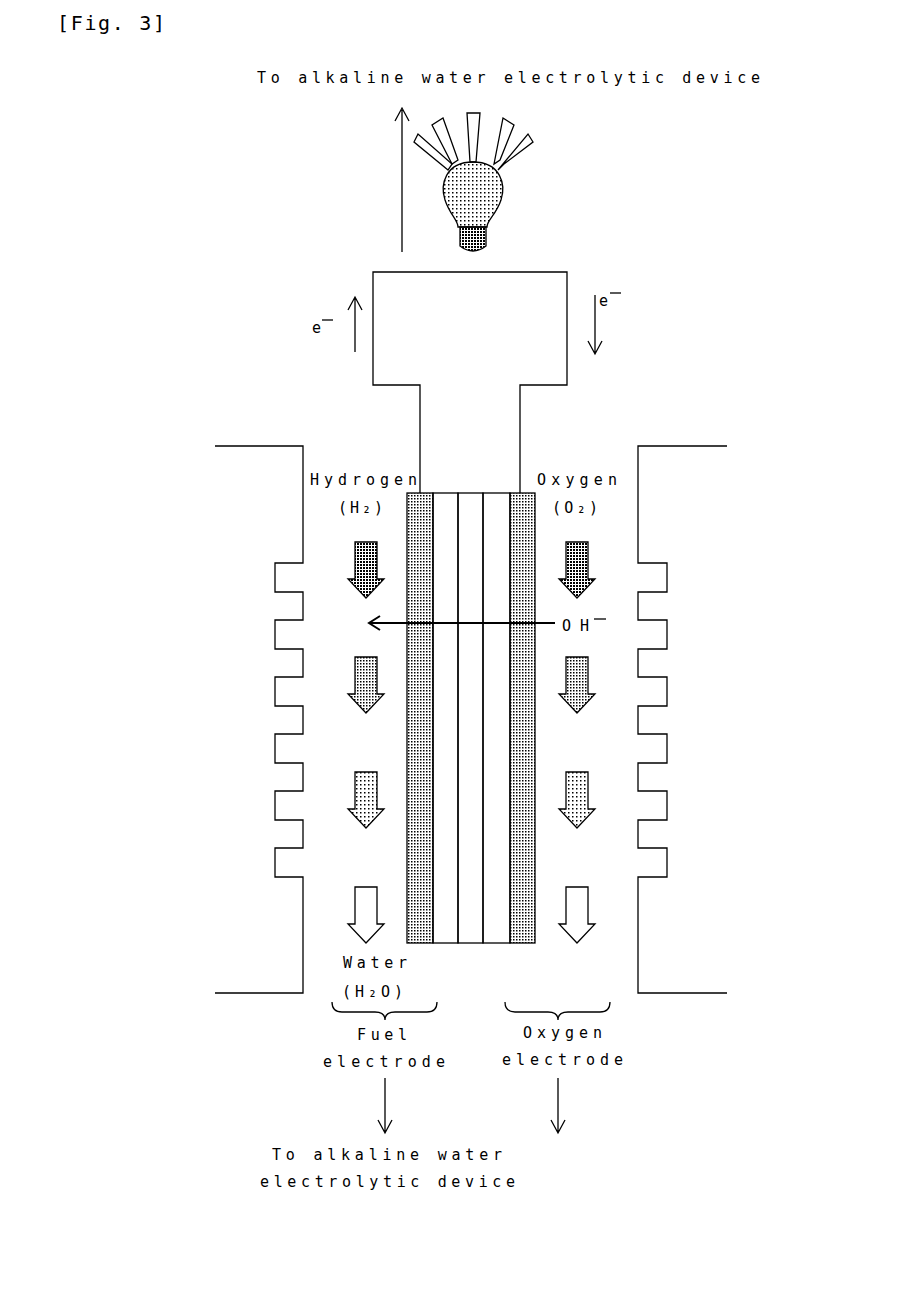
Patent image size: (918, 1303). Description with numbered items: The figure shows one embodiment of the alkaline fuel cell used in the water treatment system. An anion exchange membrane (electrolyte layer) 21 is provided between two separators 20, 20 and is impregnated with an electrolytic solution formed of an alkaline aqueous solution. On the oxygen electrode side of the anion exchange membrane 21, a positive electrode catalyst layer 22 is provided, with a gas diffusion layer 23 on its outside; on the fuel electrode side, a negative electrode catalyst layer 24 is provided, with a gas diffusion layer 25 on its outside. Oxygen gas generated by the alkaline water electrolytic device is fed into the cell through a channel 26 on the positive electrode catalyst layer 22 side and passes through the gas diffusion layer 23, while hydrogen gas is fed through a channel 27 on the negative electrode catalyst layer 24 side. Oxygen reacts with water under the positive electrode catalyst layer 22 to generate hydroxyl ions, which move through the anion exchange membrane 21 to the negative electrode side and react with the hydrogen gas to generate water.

The separator 20 is at (285, 478).
The anion exchange membrane (electrolyte layer) 21 is at (465, 502).
The positive electrode catalyst layer 22 is at (495, 738).
The gas diffusion layer 23 is at (525, 850).
The negative electrode catalyst layer 24 is at (443, 703).
The gas diffusion layer 25 is at (418, 820).
The channel 26 is at (588, 647).
The channel 27 is at (338, 615).